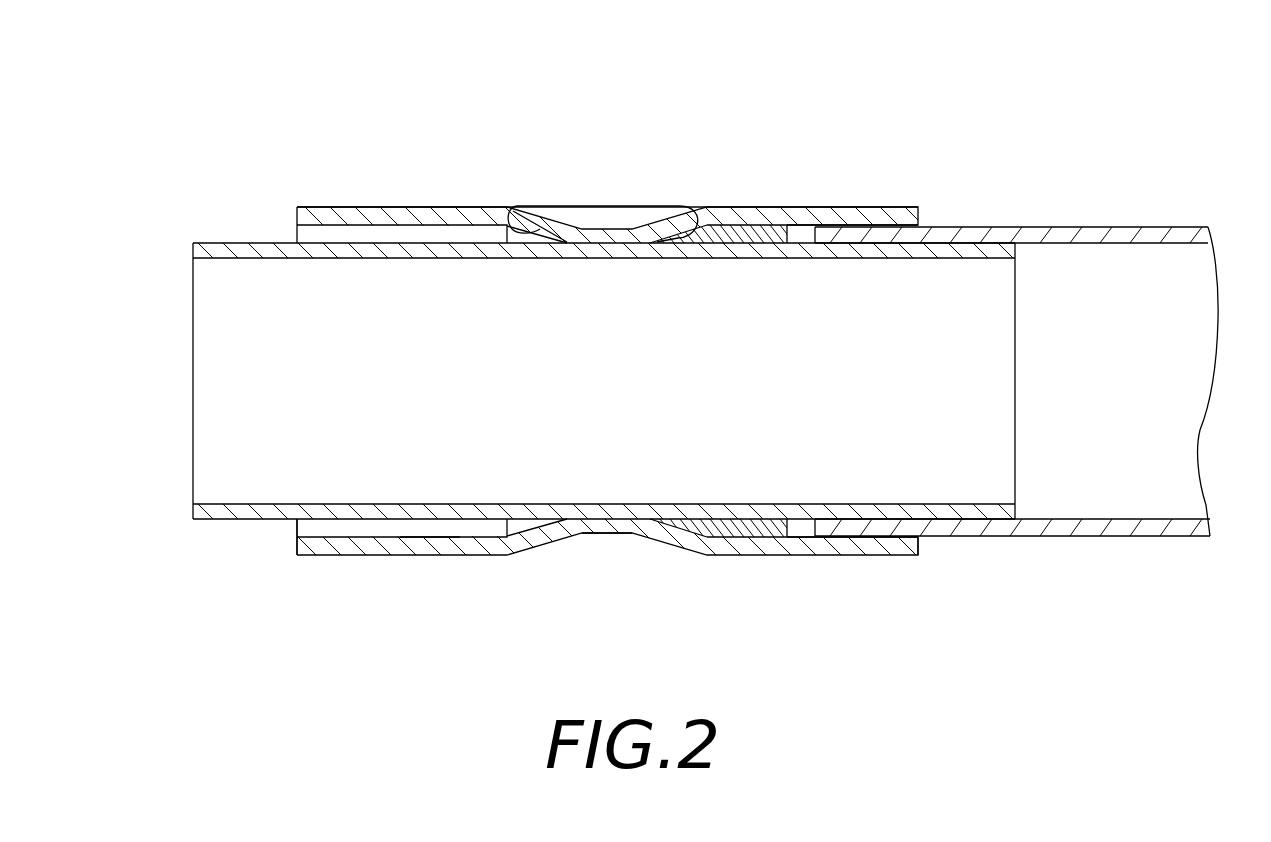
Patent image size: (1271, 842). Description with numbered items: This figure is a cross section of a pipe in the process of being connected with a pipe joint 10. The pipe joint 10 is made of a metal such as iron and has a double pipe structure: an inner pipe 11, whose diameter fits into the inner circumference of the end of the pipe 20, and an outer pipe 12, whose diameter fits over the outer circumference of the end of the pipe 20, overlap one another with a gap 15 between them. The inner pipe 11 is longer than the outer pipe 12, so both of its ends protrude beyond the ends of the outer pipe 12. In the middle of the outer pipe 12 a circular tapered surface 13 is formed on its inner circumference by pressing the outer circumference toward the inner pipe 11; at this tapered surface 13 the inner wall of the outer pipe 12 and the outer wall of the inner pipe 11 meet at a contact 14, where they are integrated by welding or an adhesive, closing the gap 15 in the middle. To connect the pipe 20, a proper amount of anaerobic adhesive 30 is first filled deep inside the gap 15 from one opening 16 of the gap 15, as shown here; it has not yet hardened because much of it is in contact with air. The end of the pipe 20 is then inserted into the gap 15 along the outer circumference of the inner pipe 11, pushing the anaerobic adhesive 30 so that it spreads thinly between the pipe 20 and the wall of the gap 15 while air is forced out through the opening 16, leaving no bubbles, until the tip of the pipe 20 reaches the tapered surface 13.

The pipe joint 10 is at (843, 138).
The inner pipe 11 is at (222, 242).
The outer pipe 12 is at (398, 207).
The tapered surface 13 is at (675, 207).
The contact 14 is at (614, 533).
The gap 15 is at (430, 532).
The opening 16 is at (300, 527).
The pipe 20 is at (1110, 194).
The anaerobic adhesive 30 is at (713, 538).